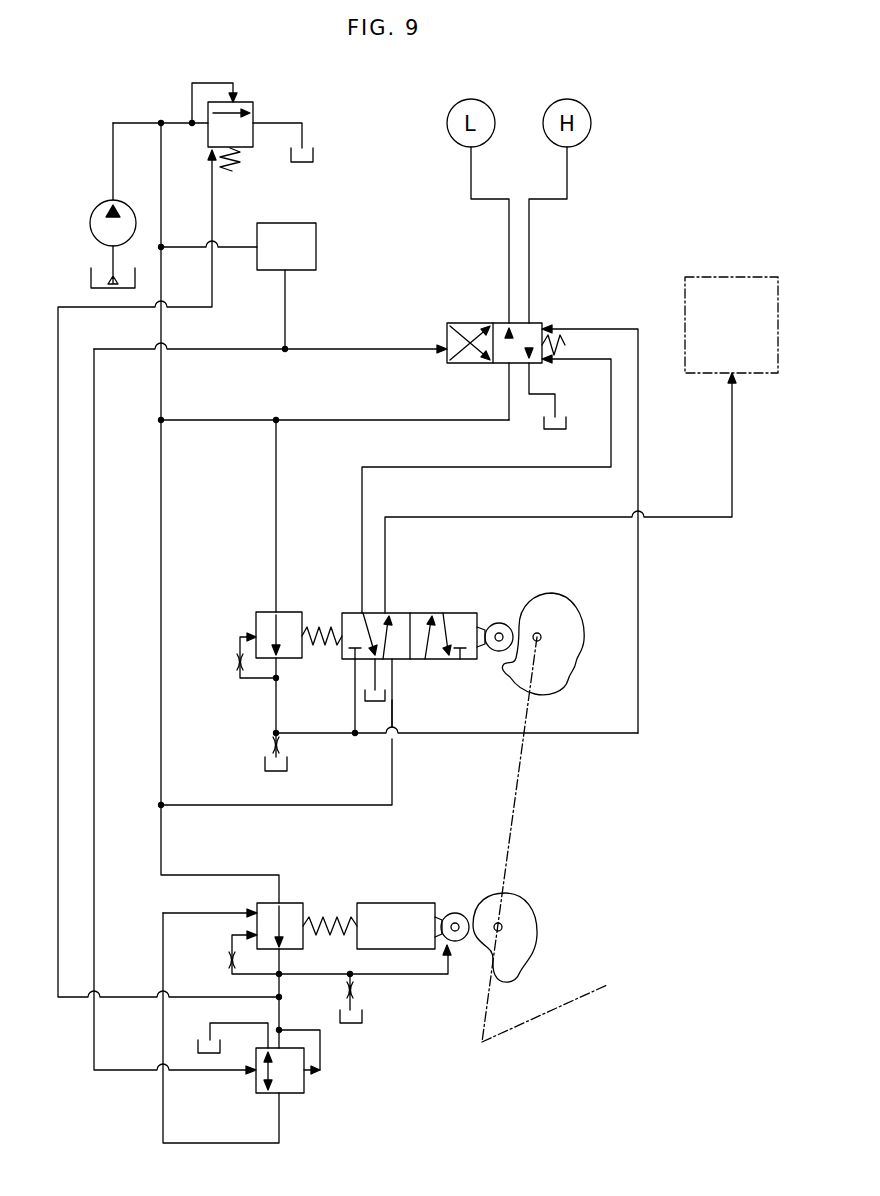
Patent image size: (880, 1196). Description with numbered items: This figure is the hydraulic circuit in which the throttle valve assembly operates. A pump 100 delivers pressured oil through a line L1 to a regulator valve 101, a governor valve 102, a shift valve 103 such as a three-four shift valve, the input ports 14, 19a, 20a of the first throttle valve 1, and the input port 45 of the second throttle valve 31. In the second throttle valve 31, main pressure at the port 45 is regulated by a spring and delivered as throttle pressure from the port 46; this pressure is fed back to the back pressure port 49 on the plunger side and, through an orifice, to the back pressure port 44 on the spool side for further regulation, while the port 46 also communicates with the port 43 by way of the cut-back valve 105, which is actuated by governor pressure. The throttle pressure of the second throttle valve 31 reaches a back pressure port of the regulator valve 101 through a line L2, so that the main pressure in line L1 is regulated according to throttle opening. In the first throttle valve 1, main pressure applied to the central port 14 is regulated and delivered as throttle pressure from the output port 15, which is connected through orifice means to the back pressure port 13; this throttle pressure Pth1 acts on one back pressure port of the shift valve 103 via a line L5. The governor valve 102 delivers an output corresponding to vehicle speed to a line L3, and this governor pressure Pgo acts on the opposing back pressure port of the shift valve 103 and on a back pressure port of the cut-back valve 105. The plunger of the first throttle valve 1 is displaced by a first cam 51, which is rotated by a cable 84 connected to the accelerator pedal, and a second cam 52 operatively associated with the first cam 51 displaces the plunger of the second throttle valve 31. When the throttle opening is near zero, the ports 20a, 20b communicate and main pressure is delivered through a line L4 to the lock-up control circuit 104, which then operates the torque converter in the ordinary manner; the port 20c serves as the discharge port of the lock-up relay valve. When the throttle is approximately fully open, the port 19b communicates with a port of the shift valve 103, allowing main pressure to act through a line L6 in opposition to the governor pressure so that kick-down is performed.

The pump 100 is at (100, 205).
The regulator valve 101 is at (250, 102).
The governor valve 102 is at (310, 222).
The shift valve 103 is at (487, 322).
The lock-up control circuit 104 is at (730, 277).
The cut-back valve 105 is at (292, 1095).
The first throttle valve 1 is at (462, 600).
The back pressure port 13 is at (250, 635).
The central port 14 is at (270, 608).
The output port 15 is at (282, 662).
The port 19a is at (428, 668).
The port 19b is at (362, 612).
The port 20a is at (452, 665).
The output port 20b is at (388, 612).
The port 20c is at (393, 700).
The second throttle valve 31 is at (418, 876).
The port 43 is at (252, 910).
The port 44 is at (250, 928).
The input port 45 is at (281, 903).
The port 46 is at (284, 949).
The port 49 is at (449, 966).
The first cam 51 is at (555, 608).
The second cam 52 is at (537, 927).
The cable 84 is at (562, 1010).
The line L1 is at (165, 170).
The line L2 is at (60, 973).
The line L3 is at (286, 306).
The line L4 is at (545, 517).
The line L5 is at (570, 735).
The line L6 is at (455, 467).
The governor pressure Pgo is at (399, 335).
The throttle pressure Pth1 is at (590, 520).